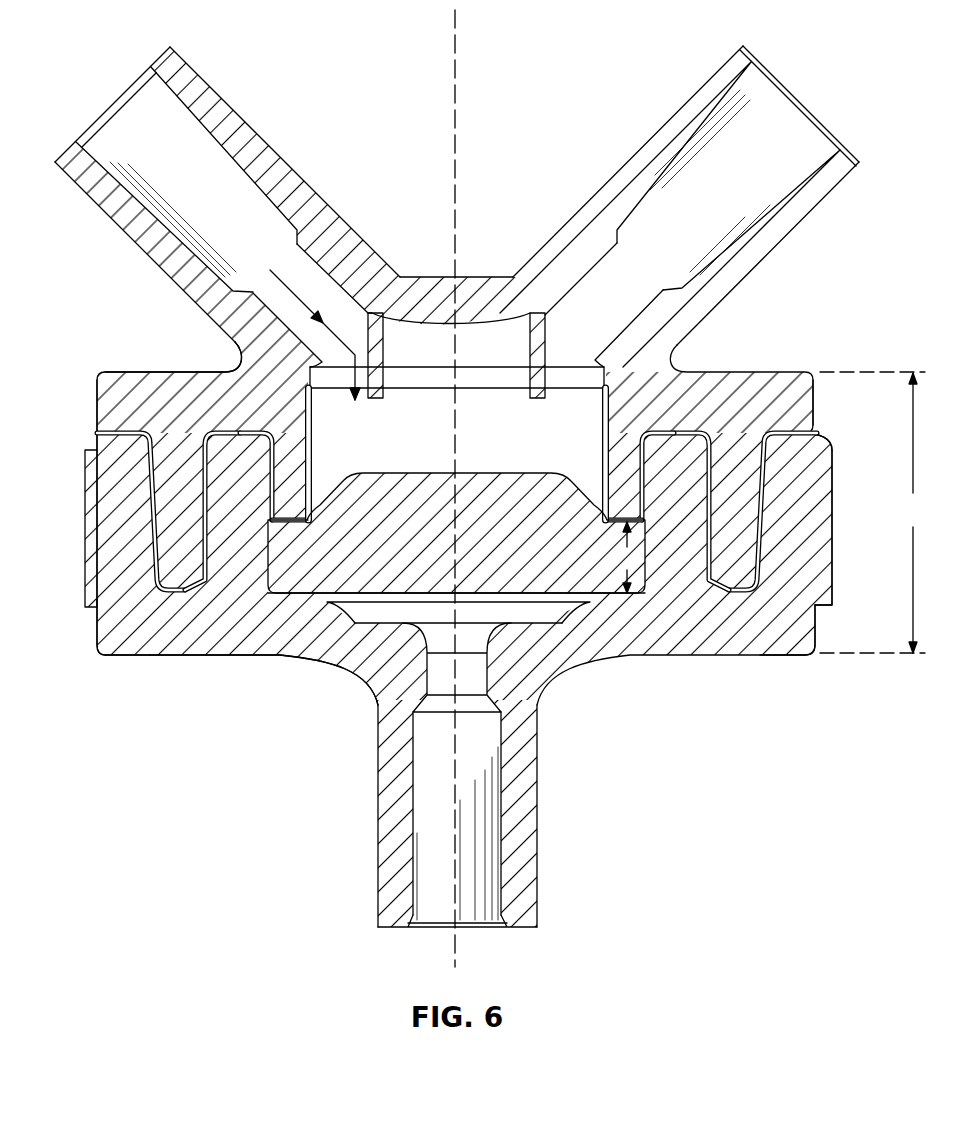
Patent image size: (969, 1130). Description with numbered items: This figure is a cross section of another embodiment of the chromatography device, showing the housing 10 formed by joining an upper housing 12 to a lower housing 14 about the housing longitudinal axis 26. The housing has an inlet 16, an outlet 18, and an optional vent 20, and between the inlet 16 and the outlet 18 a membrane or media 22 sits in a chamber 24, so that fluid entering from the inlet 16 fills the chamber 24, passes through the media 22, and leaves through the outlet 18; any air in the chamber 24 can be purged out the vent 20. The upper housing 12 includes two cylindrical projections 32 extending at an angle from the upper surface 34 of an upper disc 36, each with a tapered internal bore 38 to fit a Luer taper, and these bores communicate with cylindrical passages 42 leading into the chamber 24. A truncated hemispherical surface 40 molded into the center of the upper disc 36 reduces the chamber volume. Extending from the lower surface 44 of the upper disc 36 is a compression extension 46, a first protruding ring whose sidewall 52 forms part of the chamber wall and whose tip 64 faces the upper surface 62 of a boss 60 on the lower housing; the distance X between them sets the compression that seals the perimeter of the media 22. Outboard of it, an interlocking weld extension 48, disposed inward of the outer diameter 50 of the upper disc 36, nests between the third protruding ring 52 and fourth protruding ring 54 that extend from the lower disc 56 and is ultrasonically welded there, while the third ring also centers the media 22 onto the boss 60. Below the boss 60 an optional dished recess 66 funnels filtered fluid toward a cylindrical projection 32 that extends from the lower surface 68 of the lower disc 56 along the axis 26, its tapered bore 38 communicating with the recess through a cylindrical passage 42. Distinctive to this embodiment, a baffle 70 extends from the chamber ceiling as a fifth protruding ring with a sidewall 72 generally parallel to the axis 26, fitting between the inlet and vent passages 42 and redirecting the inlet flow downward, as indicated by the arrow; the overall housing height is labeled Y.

The housing 10 is at (72, 258).
The upper housing 12 is at (813, 378).
The lower housing 14 is at (817, 540).
The inlet 16 is at (100, 150).
The outlet 18 is at (488, 925).
The vent 20 is at (800, 126).
The media 22 is at (436, 540).
The chamber 24 is at (463, 360).
The housing longitudinal axis 26 is at (447, 40).
The cylindrical projection 32 is at (160, 268).
The upper surface 34 is at (168, 372).
The upper disc 36 is at (105, 398).
The tapered internal bore 38 is at (242, 150).
The truncated hemispherical surface 40 is at (473, 316).
The cylindrical passage 42 is at (318, 270).
The lower surface 44 is at (95, 455).
The compression extension 46 is at (276, 443).
The interlocking weld extension 48 is at (163, 483).
The outer diameter 50 is at (810, 407).
The third protruding ring 52 is at (109, 515).
The fourth protruding ring 54 is at (223, 515).
The lower disc 56 is at (110, 625).
The boss 60 is at (300, 595).
The upper surface of the boss 62 is at (307, 592).
The tip 64 is at (288, 528).
The dished recess 66 is at (543, 620).
The lower surface of the lower disc 68 is at (197, 657).
The baffle 70 is at (378, 352).
The sidewall 72 is at (540, 378).